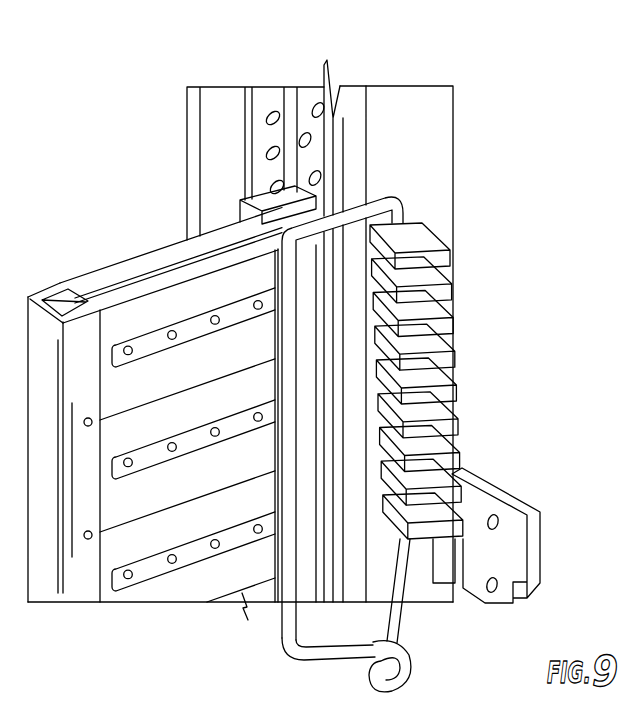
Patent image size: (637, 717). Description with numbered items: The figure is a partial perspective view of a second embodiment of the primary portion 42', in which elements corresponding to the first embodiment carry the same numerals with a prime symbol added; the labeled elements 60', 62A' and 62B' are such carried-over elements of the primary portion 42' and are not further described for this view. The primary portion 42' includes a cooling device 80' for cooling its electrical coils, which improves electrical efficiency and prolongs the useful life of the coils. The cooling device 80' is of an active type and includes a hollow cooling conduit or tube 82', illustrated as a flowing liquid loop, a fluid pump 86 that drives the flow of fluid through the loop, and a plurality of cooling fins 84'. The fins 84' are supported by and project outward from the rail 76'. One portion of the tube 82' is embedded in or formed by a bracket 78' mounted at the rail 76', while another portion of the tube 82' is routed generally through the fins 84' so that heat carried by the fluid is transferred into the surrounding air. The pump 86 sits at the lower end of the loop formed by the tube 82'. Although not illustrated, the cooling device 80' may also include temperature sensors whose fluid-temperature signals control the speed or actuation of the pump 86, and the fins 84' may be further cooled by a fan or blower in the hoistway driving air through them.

The primary portion 42' is at (155, 408).
The panel frame 60' is at (230, 638).
The first panel section 62A' is at (153, 464).
The second panel section (rail) 62B' is at (155, 254).
The rail 76' is at (275, 331).
The bracket 78' is at (266, 128).
The cooling device 80' is at (478, 409).
The tube 82' is at (347, 347).
The cooling fins 84' is at (462, 357).
The fluid pump 86 is at (413, 661).